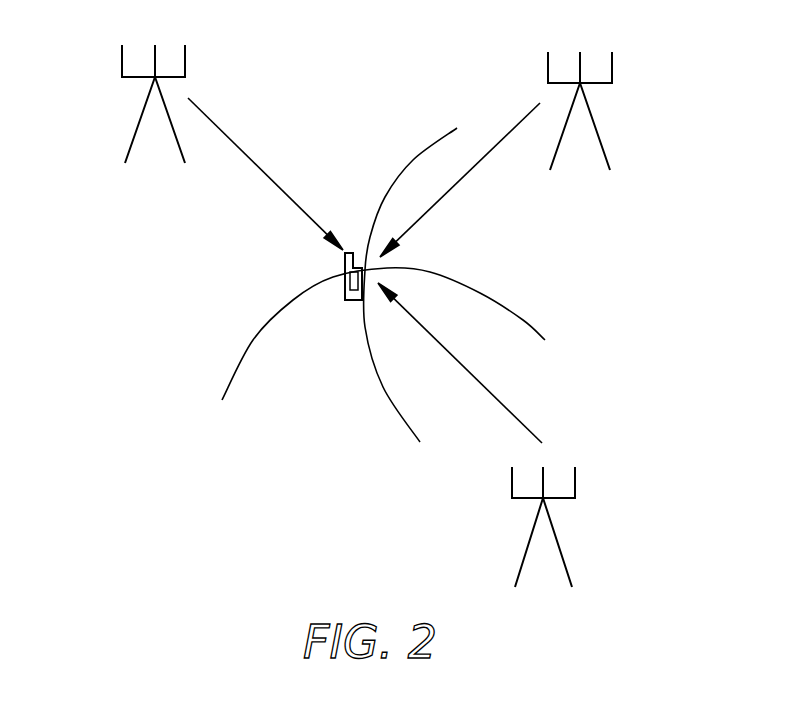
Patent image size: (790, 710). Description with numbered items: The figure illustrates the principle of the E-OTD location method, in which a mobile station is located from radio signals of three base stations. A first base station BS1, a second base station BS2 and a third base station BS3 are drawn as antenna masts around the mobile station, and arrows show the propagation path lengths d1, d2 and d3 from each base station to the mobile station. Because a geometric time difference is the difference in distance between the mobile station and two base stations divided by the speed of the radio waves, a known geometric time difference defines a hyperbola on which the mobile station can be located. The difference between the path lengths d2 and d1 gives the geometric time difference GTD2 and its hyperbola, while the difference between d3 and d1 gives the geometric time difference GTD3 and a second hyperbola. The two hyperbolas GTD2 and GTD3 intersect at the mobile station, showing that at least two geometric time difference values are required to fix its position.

The first base station BS1 is at (122, 104).
The second base station BS2 is at (614, 111).
The third base station BS3 is at (577, 527).
The propagation path length from BS1 d1 is at (265, 174).
The propagation path length from BS2 d2 is at (460, 180).
The propagation path length from BS3 d3 is at (460, 363).
The geometric time difference d2-d1 GTD2 is at (405, 267).
The geometric time difference d3-d1 GTD3 is at (341, 355).